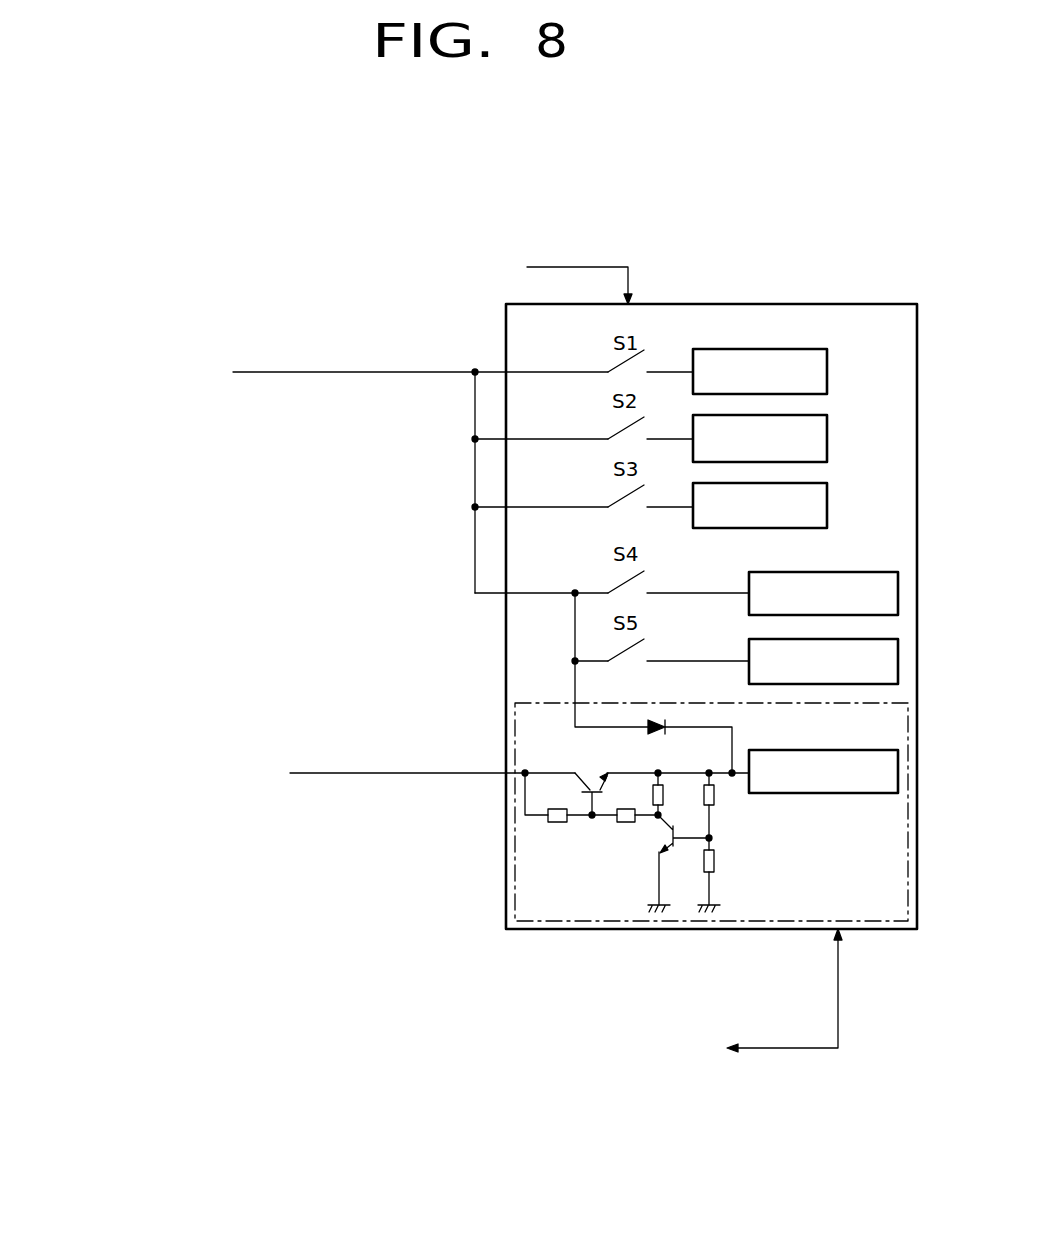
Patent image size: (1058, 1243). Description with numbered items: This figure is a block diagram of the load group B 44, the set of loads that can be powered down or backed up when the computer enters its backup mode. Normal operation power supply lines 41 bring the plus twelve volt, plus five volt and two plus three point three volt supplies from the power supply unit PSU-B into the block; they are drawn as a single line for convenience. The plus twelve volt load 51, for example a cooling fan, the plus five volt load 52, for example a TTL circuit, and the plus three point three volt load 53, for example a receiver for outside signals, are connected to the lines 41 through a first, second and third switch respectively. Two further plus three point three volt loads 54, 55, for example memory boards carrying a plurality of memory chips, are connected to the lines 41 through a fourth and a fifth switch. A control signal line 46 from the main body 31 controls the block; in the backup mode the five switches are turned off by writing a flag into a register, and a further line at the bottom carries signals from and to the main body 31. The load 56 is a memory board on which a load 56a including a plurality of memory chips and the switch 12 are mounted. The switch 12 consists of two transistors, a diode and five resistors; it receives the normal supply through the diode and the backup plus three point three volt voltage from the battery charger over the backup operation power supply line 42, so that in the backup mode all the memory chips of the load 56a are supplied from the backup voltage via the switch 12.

The switch 12 is at (770, 870).
The main body 31 is at (486, 660).
The normal operation power supply lines 41 is at (383, 373).
The backup operation power supply line 42 is at (407, 774).
The load group B 44 is at (860, 304).
The control signal line 46 is at (567, 267).
The +12 V load 51 is at (827, 378).
The +5 V load 52 is at (827, 446).
The +3.3 V load 53 is at (827, 514).
The +3.3 V load 54 is at (773, 572).
The +3.3 V load 55 is at (757, 639).
The load 56 is at (867, 921).
The load 56a is at (810, 750).